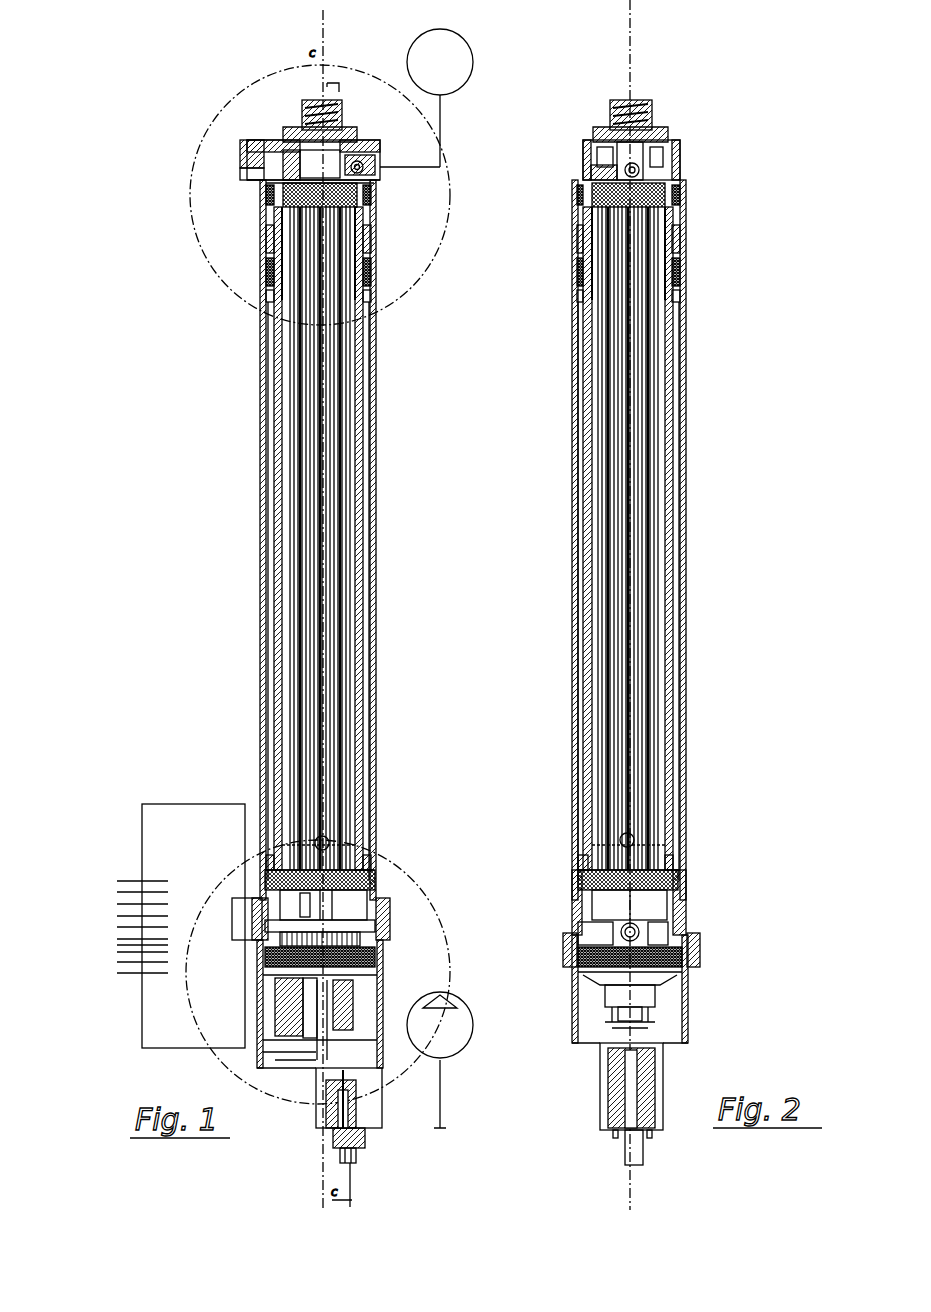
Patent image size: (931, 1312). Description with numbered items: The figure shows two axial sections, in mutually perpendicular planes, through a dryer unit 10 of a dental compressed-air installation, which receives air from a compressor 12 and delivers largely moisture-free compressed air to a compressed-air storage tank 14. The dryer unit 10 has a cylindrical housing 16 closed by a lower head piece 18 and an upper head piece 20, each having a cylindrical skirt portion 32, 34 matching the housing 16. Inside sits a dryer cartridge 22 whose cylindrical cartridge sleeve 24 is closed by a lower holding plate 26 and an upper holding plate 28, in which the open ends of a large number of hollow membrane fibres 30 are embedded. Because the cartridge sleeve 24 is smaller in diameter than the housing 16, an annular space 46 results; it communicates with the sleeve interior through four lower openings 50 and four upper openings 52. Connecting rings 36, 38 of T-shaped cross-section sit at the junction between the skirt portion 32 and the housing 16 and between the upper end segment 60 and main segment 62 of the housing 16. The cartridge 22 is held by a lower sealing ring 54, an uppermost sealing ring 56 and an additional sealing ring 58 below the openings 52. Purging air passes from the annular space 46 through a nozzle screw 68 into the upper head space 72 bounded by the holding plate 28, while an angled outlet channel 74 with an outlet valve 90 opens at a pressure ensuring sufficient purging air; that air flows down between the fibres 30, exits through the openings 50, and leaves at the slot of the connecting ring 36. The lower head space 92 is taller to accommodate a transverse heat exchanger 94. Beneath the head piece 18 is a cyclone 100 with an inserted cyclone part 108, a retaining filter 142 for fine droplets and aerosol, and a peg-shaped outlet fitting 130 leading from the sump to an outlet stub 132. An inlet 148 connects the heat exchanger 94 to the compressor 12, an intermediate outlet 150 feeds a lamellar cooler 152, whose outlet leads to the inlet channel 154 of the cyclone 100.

In FIG. 1, the dryer unit 10 is at (190, 517).
In FIG. 2, the dryer unit 10 is at (748, 471).
In FIG. 1, the compressor 12 is at (470, 1028).
In FIG. 1, the compressed-air storage tank 14 is at (470, 60).
In FIG. 1, the cylindrical housing 16 is at (260, 421).
In FIG. 2, the cylindrical housing 16 is at (702, 593).
In FIG. 1, the lower head piece 18 is at (236, 911).
In FIG. 2, the lower head piece 18 is at (690, 888).
In FIG. 1, the upper head piece 20 is at (246, 175).
In FIG. 2, the upper head piece 20 is at (683, 162).
In FIG. 1, the dryer cartridge 22 is at (275, 563).
In FIG. 2, the dryer cartridge 22 is at (684, 662).
In FIG. 1, the cartridge sleeve 24 is at (362, 540).
In FIG. 2, the cartridge sleeve 24 is at (670, 708).
In FIG. 1, the lower holding plate 26 is at (345, 845).
In FIG. 2, the lower holding plate 26 is at (650, 858).
In FIG. 1, the upper holding plate 28 is at (336, 215).
In FIG. 2, the upper holding plate 28 is at (688, 208).
In FIG. 1, the hollow membrane fibres 30 is at (345, 400).
In FIG. 2, the hollow membrane fibres 30 is at (662, 738).
In FIG. 1, the skirt portion 32 is at (377, 880).
In FIG. 2, the skirt portion 32 is at (543, 838).
In FIG. 1, the skirt portion 34 is at (367, 185).
In FIG. 1, the connecting ring 36 is at (363, 842).
In FIG. 2, the connecting ring 36 is at (587, 858).
In FIG. 1, the connecting ring 38 is at (378, 299).
In FIG. 2, the connecting ring 38 is at (580, 298).
In FIG. 1, the annular space 46 is at (370, 615).
In FIG. 2, the annular space 46 is at (682, 510).
In FIG. 1, the openings 50 is at (320, 833).
In FIG. 2, the openings 50 is at (626, 838).
In FIG. 1, the openings 52 is at (268, 244).
In FIG. 2, the openings 52 is at (682, 320).
In FIG. 1, the lower sealing ring 54 is at (270, 882).
In FIG. 2, the lower sealing ring 54 is at (583, 882).
In FIG. 1, the uppermost sealing ring 56 is at (262, 190).
In FIG. 2, the uppermost sealing ring 56 is at (578, 185).
In FIG. 1, the additional sealing ring 58 is at (268, 268).
In FIG. 2, the additional sealing ring 58 is at (582, 272).
In FIG. 1, the upper end segment 60 is at (368, 248).
In FIG. 2, the upper end segment 60 is at (686, 230).
In FIG. 1, the main segment 62 is at (372, 340).
In FIG. 2, the main segment 62 is at (682, 305).
In FIG. 1, the nozzle screw 68 is at (272, 137).
In FIG. 1, the upper head space 72 is at (297, 165).
In FIG. 2, the upper head space 72 is at (600, 173).
In FIG. 1, the angled outlet channel 74 is at (360, 176).
In FIG. 2, the angled outlet channel 74 is at (636, 166).
In FIG. 1, the outlet valve 90 is at (348, 113).
In FIG. 2, the outlet valve 90 is at (605, 117).
In FIG. 1, the lower head space 92 is at (347, 903).
In FIG. 2, the lower head space 92 is at (645, 903).
In FIG. 1, the heat exchanger 94 is at (312, 906).
In FIG. 2, the heat exchanger 94 is at (650, 935).
In FIG. 1, the cyclone 100 is at (260, 1003).
In FIG. 2, the cyclone 100 is at (688, 1015).
In FIG. 2, the cyclone part 108 is at (606, 1002).
In FIG. 1, the outlet fitting 130 is at (350, 1112).
In FIG. 2, the outlet fitting 130 is at (613, 1107).
In FIG. 1, the outlet stub 132 is at (358, 1160).
In FIG. 2, the outlet stub 132 is at (613, 1148).
In FIG. 1, the retaining filter 142 is at (387, 946).
In FIG. 2, the retaining filter 142 is at (630, 957).
In FIG. 1, the inlet 148 is at (382, 927).
In FIG. 1, the intermediate outlet 150 is at (168, 882).
In FIG. 1, the lamellar cooler 152 is at (125, 945).
In FIG. 1, the inlet channel 154 is at (270, 1048).